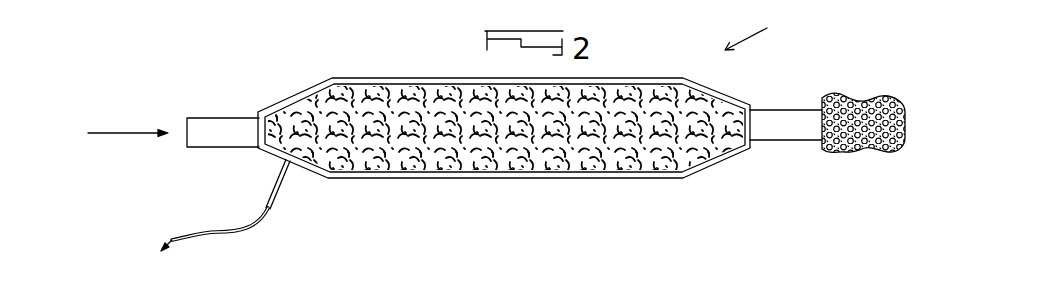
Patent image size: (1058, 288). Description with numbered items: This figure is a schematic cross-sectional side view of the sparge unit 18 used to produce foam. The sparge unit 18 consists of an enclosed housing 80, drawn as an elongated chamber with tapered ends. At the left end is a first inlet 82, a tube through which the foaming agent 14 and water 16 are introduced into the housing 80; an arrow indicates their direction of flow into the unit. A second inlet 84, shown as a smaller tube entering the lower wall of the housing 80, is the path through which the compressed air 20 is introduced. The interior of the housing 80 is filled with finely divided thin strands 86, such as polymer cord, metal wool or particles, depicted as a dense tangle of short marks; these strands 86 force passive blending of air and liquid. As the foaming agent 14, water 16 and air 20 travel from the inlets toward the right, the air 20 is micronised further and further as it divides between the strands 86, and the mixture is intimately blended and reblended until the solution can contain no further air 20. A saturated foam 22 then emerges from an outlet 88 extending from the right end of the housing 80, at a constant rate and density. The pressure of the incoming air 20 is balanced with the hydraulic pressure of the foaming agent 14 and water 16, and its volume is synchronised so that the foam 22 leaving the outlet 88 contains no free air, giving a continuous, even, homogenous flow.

The foaming agent 14 is at (125, 133).
The water 16 is at (140, 135).
The sparge unit 18 is at (763, 31).
The compressed air 20 is at (150, 265).
The saturated foam 22 is at (851, 155).
The housing 80 is at (622, 78).
The first inlet 82 is at (223, 125).
The second inlet 84 is at (281, 200).
The thin strands 86 is at (542, 152).
The outlet 88 is at (790, 136).